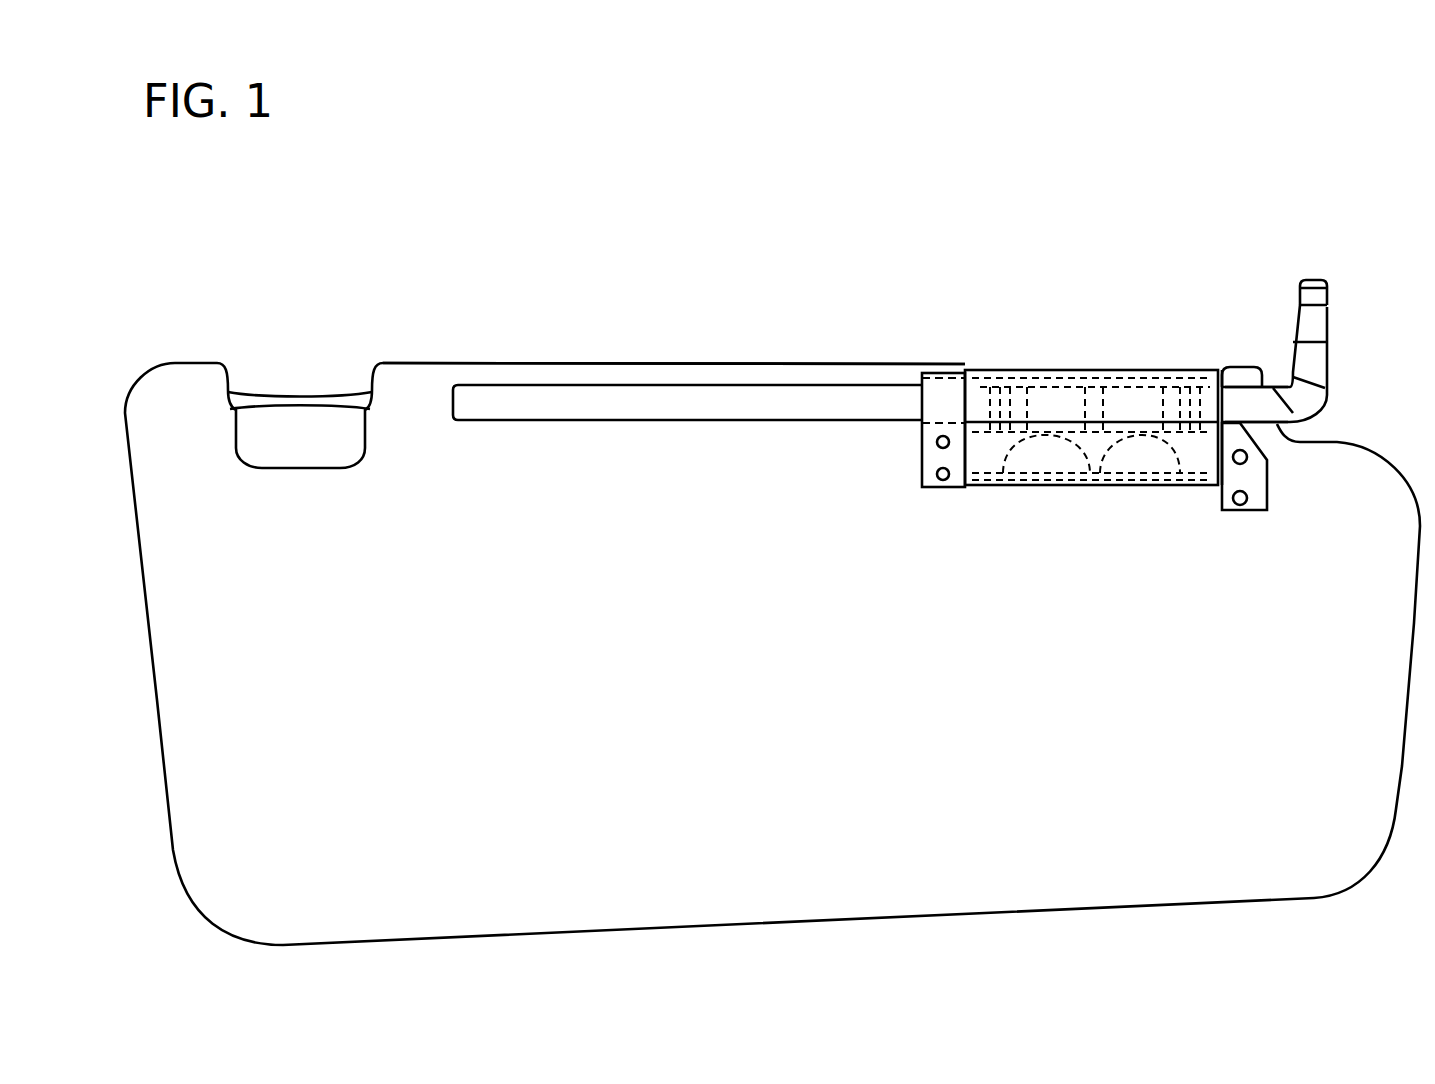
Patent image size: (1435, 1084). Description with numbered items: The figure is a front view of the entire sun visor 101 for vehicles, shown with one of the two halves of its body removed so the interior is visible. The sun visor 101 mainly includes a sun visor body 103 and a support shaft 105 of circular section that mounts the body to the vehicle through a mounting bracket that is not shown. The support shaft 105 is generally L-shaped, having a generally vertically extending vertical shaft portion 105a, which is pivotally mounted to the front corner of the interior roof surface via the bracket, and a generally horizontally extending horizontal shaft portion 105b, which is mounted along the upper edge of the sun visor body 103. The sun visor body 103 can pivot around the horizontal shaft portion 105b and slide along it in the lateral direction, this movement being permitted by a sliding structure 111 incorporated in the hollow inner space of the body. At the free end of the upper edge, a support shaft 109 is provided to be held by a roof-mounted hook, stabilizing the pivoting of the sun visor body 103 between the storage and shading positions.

The sun visor 101 is at (915, 312).
The sun visor body 103 is at (645, 364).
The support shaft 105 is at (1332, 303).
The vertical shaft portion 105a is at (1298, 355).
The horizontal shaft portion 105b is at (782, 393).
The support shaft 109 is at (292, 395).
The sliding structure 111 is at (1060, 368).